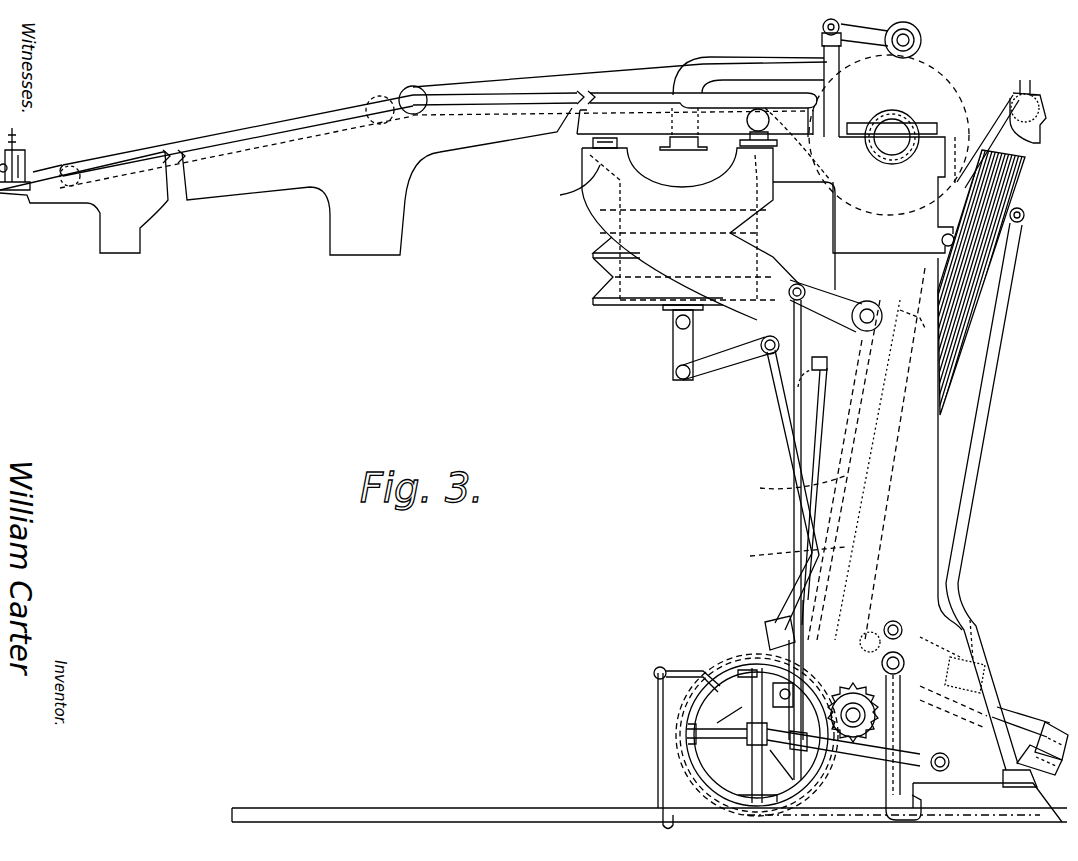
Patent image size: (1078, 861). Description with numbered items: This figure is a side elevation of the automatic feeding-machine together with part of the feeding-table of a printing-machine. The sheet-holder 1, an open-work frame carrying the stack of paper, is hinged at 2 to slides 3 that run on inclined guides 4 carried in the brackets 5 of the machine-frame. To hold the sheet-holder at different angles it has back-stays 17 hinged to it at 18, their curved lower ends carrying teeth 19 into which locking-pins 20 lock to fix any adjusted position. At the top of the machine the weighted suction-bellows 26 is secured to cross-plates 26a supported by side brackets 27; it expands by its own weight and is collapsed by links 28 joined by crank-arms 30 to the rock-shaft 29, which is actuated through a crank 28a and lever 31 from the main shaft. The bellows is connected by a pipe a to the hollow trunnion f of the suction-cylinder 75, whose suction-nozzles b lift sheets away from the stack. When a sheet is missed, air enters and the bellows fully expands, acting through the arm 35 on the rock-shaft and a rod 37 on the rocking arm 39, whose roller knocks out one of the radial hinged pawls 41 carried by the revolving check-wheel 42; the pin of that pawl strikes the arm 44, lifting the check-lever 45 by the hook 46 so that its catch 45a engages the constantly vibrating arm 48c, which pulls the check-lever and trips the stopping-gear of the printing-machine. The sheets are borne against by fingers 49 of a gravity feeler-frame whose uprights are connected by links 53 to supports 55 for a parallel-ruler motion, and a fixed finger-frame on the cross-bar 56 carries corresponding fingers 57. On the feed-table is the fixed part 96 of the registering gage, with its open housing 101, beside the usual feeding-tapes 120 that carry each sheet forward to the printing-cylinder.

The sheet-holder 1 is at (950, 382).
The hinge 2 is at (905, 630).
The slides 3 is at (945, 680).
The inclined guides 4 is at (1012, 716).
The brackets 5 is at (773, 630).
The back-stays 17 is at (968, 510).
The hinge of back-stays 18 is at (1024, 230).
The teeth 19 is at (990, 682).
The locking-pins 20 is at (972, 640).
The suction-bellows 26 is at (598, 258).
The cross-plates 26a is at (582, 175).
The side brackets 27 is at (679, 214).
The links 28 is at (676, 352).
The crank 28a is at (760, 379).
The rock-shaft 29 is at (870, 322).
The crank-arms 30 is at (738, 362).
The lever 31 is at (784, 432).
The arm 35 is at (855, 294).
The rod 37 is at (790, 518).
The rocking arm 39 is at (873, 747).
The radial hinged pawls 41 is at (758, 692).
The check-wheel 42 is at (692, 770).
The arm 44 is at (683, 672).
The check-lever 45 is at (541, 808).
The catch 45a is at (920, 803).
The hook 46 is at (656, 727).
The vibrating arm 48c is at (900, 745).
The fingers 49 is at (780, 556).
The links 53 is at (857, 504).
The supports 55 is at (793, 487).
The cross-bar 56 is at (941, 240).
The fingers 57 is at (906, 309).
The suction-cylinder 75 is at (930, 92).
The fixed part of gage 96 is at (28, 159).
The open housing 101 is at (35, 170).
The feeding-tapes 120 is at (232, 128).
The pipe a is at (757, 72).
The suction-nozzles b is at (934, 136).
The hollow trunnion f is at (905, 128).